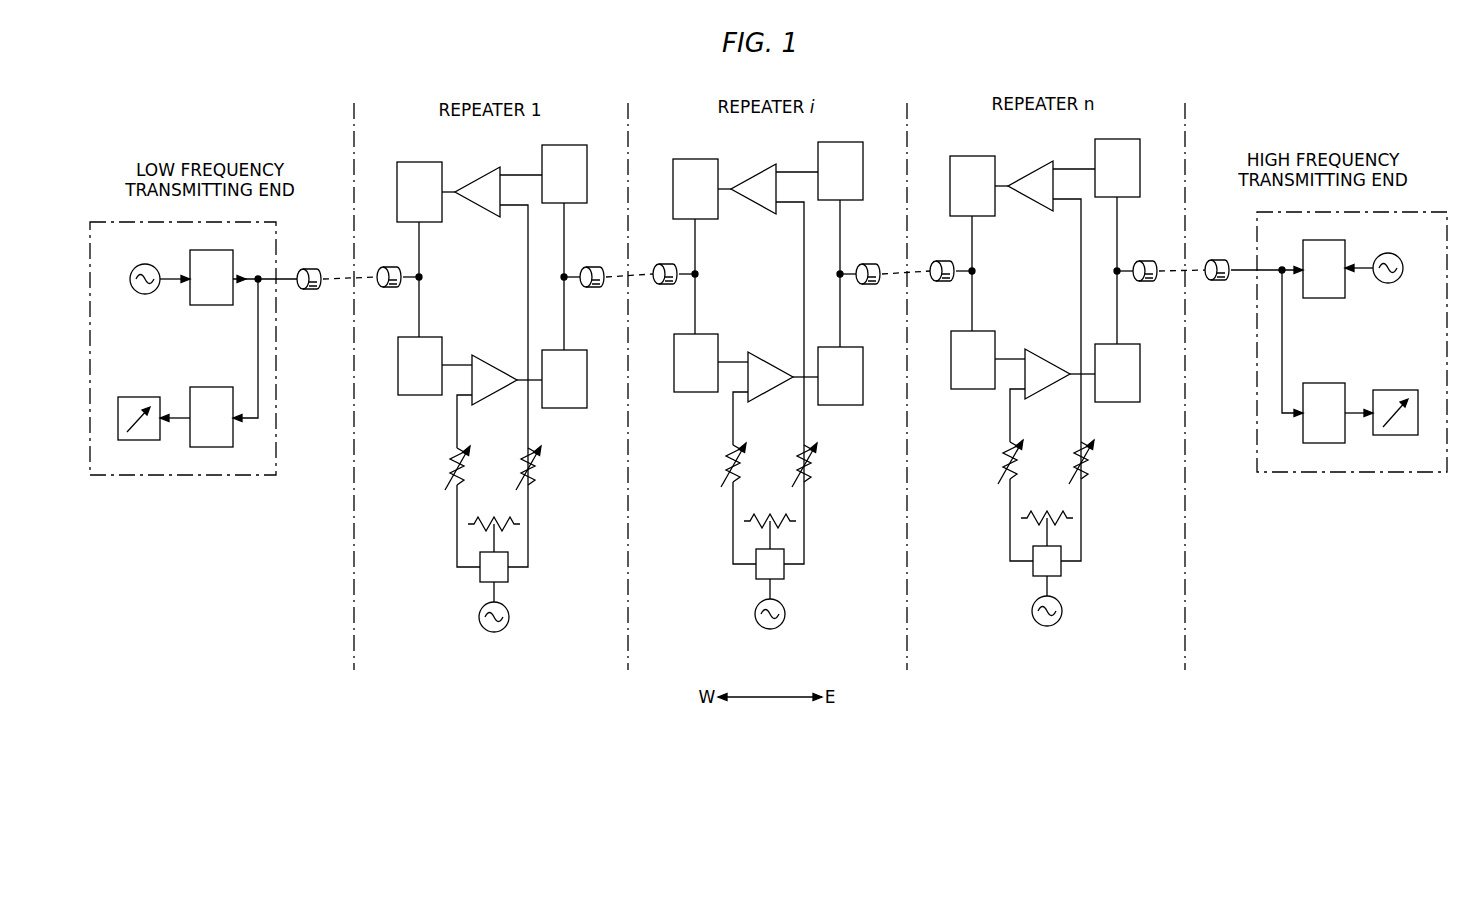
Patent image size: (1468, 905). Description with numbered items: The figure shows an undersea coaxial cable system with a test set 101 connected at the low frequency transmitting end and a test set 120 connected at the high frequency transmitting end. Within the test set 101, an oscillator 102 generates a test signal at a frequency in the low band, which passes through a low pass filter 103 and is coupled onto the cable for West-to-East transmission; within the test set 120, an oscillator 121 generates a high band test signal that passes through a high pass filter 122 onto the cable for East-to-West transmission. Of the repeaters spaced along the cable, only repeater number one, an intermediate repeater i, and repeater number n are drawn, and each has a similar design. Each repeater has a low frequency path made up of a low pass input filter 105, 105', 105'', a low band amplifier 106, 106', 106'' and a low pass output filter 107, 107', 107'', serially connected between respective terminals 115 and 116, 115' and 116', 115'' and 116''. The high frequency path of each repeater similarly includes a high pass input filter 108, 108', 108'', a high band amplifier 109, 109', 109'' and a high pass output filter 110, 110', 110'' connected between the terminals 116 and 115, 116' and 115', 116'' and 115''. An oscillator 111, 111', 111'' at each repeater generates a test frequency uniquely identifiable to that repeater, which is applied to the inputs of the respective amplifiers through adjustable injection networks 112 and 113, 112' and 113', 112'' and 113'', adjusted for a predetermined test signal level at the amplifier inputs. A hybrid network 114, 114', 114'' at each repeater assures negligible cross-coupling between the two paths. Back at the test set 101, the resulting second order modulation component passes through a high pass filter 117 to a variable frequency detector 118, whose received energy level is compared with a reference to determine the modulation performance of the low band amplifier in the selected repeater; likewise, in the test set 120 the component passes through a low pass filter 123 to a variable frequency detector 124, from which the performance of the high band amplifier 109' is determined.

The test set 101 is at (229, 476).
The oscillator 102 is at (149, 264).
The low pass filter 103 is at (206, 252).
The low pass input filter 105 is at (414, 386).
The low band amplifier 106 is at (492, 365).
The low pass output filter 107 is at (576, 391).
The high pass input filter 108 is at (550, 161).
The high band amplifier 109 is at (471, 173).
The high pass output filter 110 is at (420, 176).
The oscillator 111 is at (488, 624).
The adjustable injection network 112 is at (432, 473).
The adjustable injection network 113 is at (548, 472).
The hybrid network 114 is at (509, 560).
The terminal 115 is at (436, 291).
The terminal 116 is at (547, 291).
The high pass filter 117 is at (212, 387).
The variable frequency detector 118 is at (140, 397).
The test set 120 is at (1333, 472).
The oscillator 121 is at (1388, 253).
The high pass filter 122 is at (1330, 240).
The low pass filter 123 is at (1325, 383).
The variable frequency detector 124 is at (1392, 390).
The low pass input filter 105' is at (688, 383).
The low band amplifier 106' is at (768, 362).
The low pass output filter 107' is at (853, 388).
The high pass input filter 108' is at (828, 158).
The high band amplifier 109' is at (747, 170).
The high pass output filter 110' is at (697, 173).
The oscillator 111' is at (760, 621).
The adjustable injection network 112' is at (707, 470).
The adjustable injection network 113' is at (826, 469).
The hybrid network 114' is at (786, 557).
The terminal 115' is at (714, 288).
The terminal 116' is at (821, 288).
The low pass input filter 105'' is at (964, 380).
The low band amplifier 106'' is at (1045, 359).
The low pass output filter 107'' is at (1131, 385).
The high pass input filter 108'' is at (1106, 155).
The high band amplifier 109'' is at (1024, 167).
The high pass output filter 110'' is at (975, 170).
The oscillator 111'' is at (1038, 618).
The adjustable injection network 112'' is at (983, 467).
The adjustable injection network 113'' is at (1104, 466).
The hybrid network 114'' is at (1064, 554).
The terminal 115'' is at (992, 285).
The terminal 116'' is at (1097, 285).